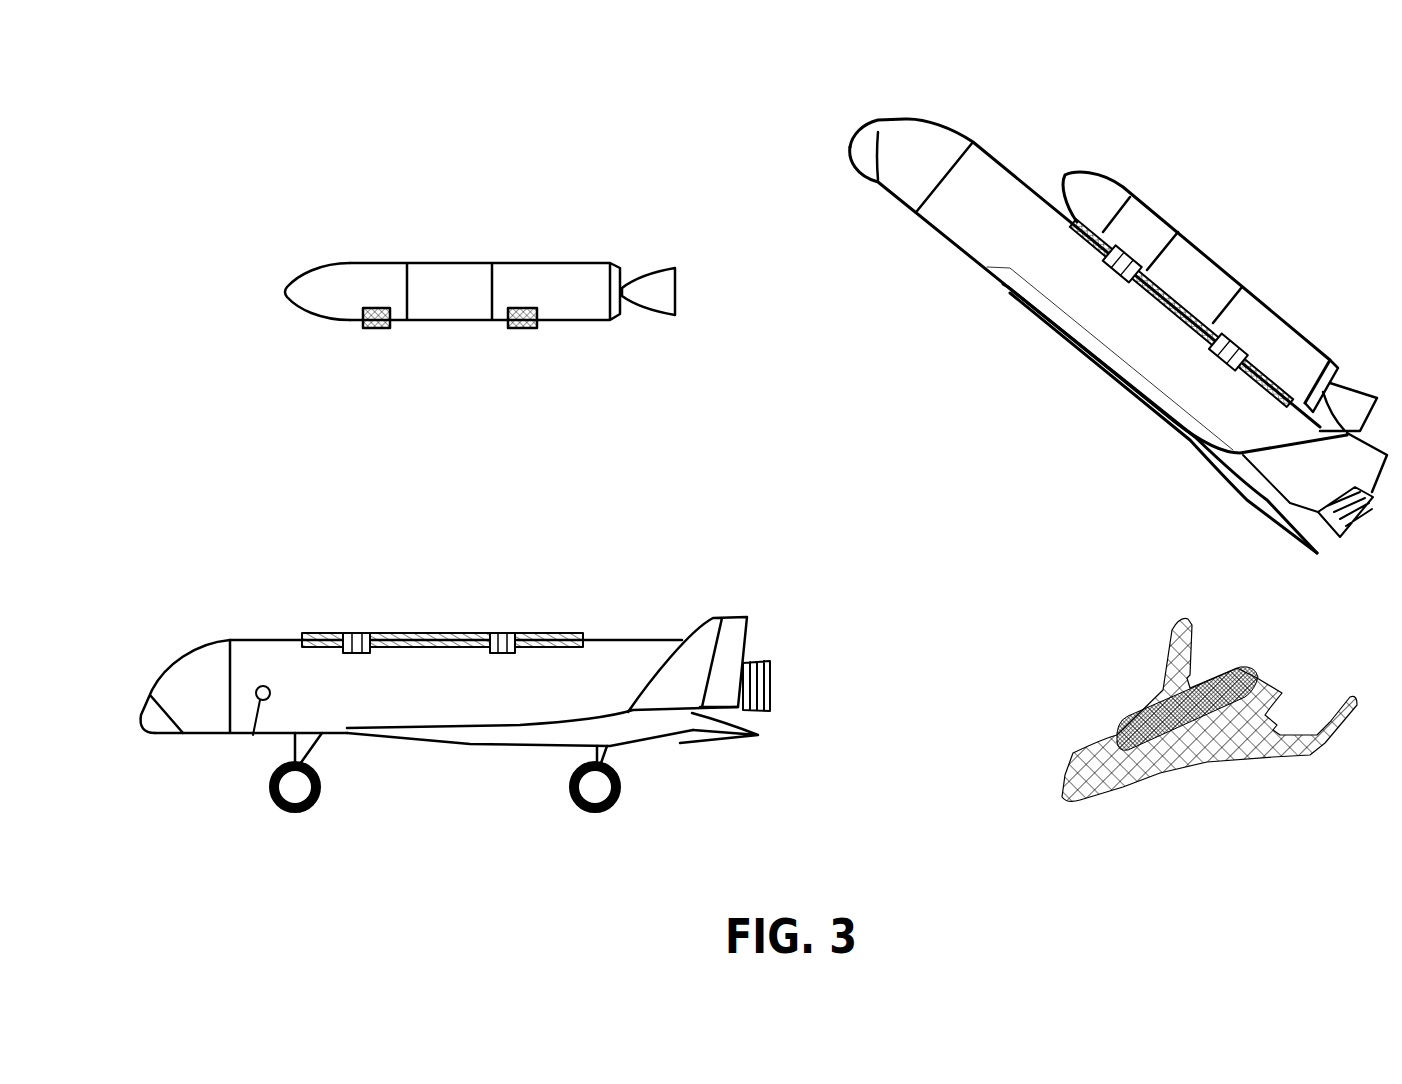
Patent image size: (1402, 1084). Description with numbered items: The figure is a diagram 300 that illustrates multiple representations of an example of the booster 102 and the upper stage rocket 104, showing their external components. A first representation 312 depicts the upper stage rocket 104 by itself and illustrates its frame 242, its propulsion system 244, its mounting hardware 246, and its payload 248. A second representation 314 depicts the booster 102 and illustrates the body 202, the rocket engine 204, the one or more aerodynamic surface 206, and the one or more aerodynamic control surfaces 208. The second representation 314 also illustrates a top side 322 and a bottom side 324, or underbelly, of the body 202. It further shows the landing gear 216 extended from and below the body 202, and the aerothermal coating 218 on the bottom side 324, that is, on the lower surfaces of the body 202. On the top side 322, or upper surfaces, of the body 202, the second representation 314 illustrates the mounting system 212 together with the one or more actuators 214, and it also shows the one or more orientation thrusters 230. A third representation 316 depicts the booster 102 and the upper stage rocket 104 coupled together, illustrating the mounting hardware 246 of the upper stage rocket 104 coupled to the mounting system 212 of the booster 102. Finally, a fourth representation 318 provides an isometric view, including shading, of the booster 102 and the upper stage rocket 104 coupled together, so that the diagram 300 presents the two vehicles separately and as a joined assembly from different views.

The diagram 300 is at (146, 113).
The first representation 312 is at (371, 182).
The upper stage rocket 104 is at (485, 291).
The payload 248 is at (372, 280).
The frame 242 is at (563, 258).
The propulsion system 244 is at (678, 283).
The mounting hardware 246 is at (378, 330).
The second representation 314 is at (417, 870).
The top side 322 is at (489, 561).
The bottom side 324 is at (490, 815).
The booster 102 is at (446, 686).
The body 202 is at (253, 643).
The orientation thrusters 230 is at (252, 738).
The mounting system 212 is at (590, 637).
The actuators 214 is at (352, 633).
The aerothermal coating 218 is at (363, 740).
The aerodynamic surface 206 is at (633, 720).
The aerodynamic control surfaces 208 is at (740, 640).
The rocket engine 204 is at (771, 683).
The landing gear 216 is at (620, 790).
The third representation 316 is at (1096, 140).
The fourth representation 318 is at (1140, 870).